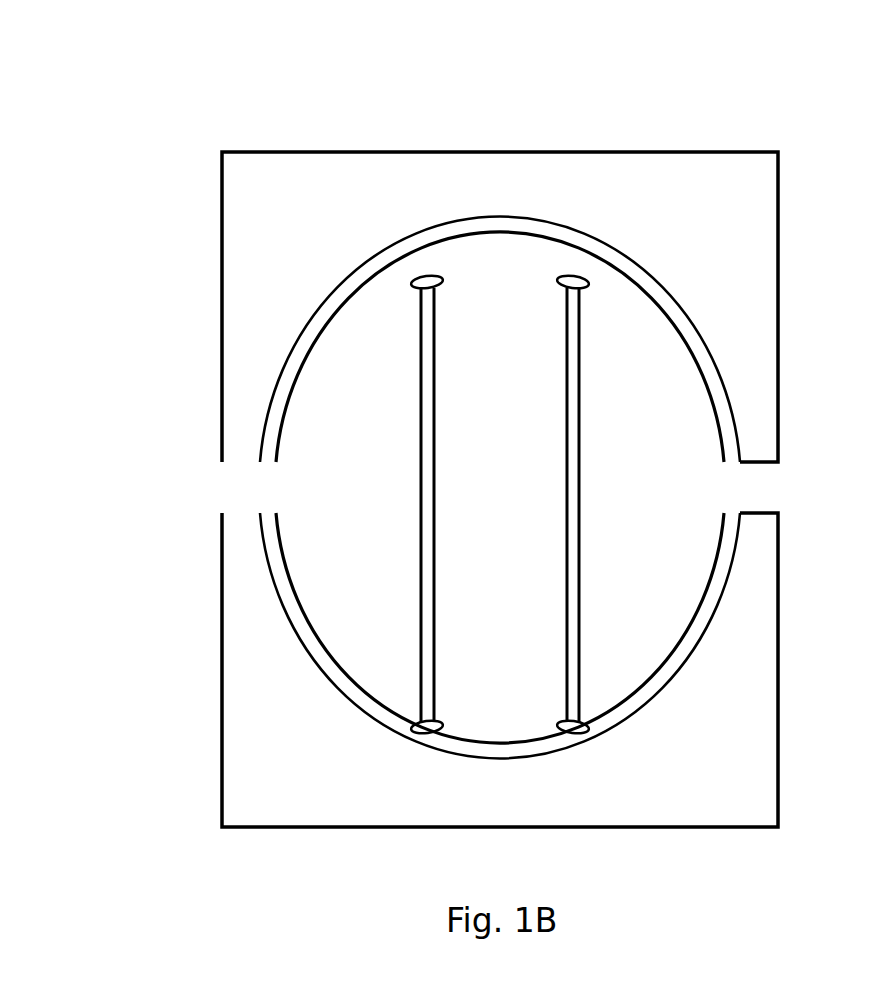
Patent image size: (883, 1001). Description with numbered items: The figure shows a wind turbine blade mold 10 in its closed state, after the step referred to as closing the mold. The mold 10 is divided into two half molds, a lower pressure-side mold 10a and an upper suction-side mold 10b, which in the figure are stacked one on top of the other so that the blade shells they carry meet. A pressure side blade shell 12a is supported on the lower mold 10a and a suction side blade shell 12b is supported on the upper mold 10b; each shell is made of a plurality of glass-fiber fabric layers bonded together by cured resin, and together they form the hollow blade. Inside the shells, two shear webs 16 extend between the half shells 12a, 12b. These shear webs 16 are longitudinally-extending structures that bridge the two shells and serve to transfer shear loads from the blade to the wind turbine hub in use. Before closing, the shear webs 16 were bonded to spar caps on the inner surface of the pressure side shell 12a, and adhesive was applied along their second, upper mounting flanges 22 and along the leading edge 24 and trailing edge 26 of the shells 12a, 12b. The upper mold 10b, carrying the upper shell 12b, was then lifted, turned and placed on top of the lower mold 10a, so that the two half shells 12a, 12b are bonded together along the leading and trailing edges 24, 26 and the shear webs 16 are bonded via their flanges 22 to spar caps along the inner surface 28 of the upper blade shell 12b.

The mold 10 is at (497, 425).
The lower pressure-side mold 10a is at (762, 797).
The upper suction-side mold 10b is at (236, 178).
The pressure side blade shell 12a is at (681, 655).
The suction side blade shell 12b is at (702, 345).
The shear webs 16 is at (496, 463).
The second longitudinally-extending mounting flange 22 is at (426, 278).
The leading edge 24 is at (258, 459).
The trailing edge 26 is at (742, 459).
The inner surface of the upper blade shell 28 is at (318, 328).